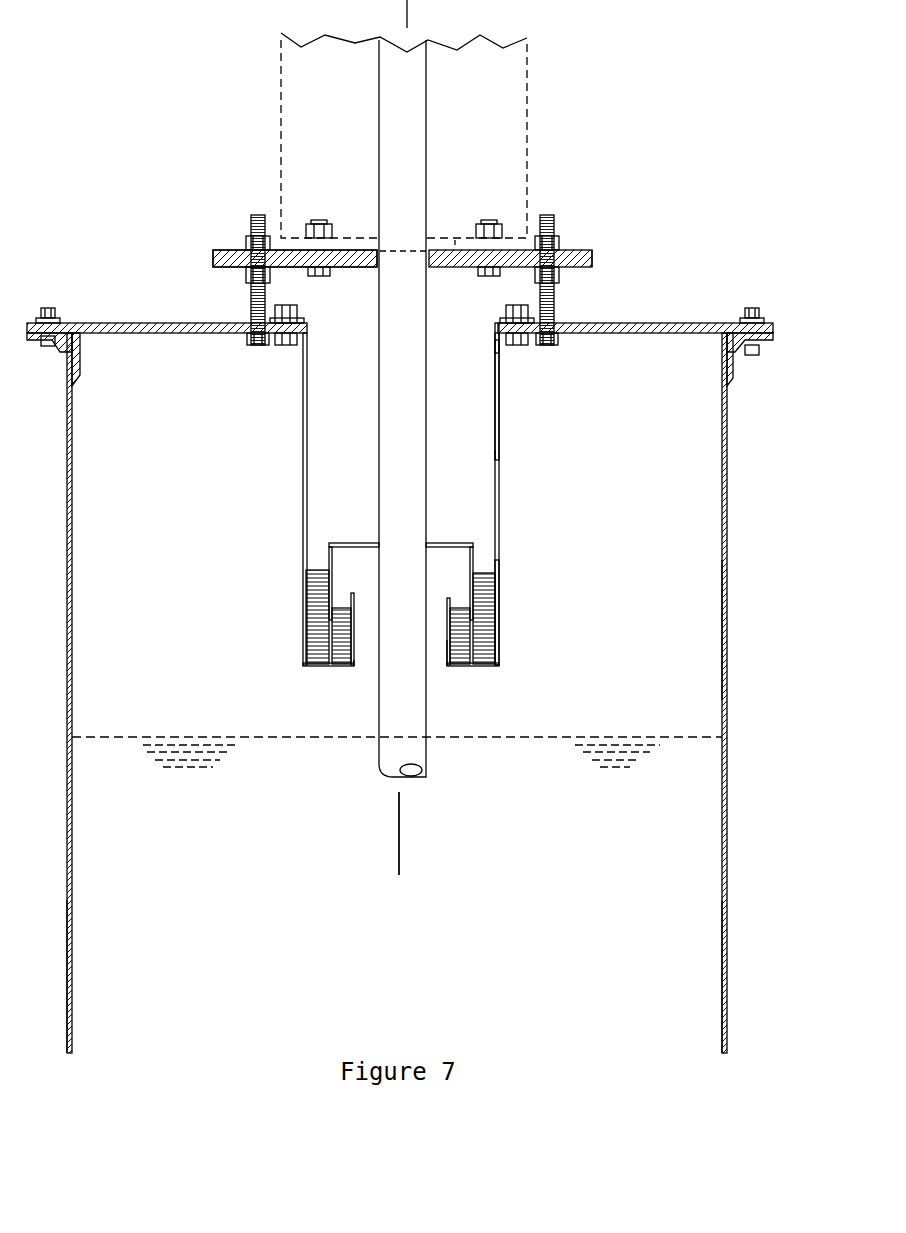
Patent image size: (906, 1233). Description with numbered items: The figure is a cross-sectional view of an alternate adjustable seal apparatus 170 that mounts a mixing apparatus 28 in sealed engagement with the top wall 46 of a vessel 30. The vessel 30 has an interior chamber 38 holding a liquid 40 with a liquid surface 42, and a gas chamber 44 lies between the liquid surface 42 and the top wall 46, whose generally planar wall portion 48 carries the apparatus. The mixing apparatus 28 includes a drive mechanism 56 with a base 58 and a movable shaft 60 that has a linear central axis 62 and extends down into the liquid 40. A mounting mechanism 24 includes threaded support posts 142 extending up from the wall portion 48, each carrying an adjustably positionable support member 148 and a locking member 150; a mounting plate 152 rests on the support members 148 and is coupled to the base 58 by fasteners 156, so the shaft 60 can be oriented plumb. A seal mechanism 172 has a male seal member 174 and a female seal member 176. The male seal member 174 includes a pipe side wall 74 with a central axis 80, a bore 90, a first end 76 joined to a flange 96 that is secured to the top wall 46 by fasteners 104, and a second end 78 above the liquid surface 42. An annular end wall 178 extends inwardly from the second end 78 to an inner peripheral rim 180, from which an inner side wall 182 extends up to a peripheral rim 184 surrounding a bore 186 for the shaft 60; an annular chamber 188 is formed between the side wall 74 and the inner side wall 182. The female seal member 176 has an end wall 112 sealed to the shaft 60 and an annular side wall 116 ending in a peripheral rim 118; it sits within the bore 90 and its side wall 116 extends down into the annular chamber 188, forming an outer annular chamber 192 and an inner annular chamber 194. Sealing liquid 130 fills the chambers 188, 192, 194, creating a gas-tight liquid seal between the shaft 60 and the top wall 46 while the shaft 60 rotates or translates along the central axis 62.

The mounting mechanism 24 is at (651, 261).
The mixing apparatus 28 is at (585, 63).
The vessel 30 is at (739, 530).
The interior chamber 38 is at (711, 676).
The liquid 40 is at (697, 900).
The liquid surface 42 is at (622, 737).
The gas chamber 44 is at (702, 628).
The top wall 46 is at (756, 322).
The wall portion 48 is at (698, 323).
The drive mechanism 56 is at (530, 118).
The base 58 is at (455, 240).
The shaft 60 is at (426, 713).
The central axis 62 is at (399, 856).
The side wall 74 is at (499, 487).
The first end 76 is at (495, 326).
The second end 78 is at (498, 663).
The central axis 80 is at (399, 834).
The bore 90 is at (303, 447).
The flange 96 is at (558, 323).
The fasteners 104 is at (286, 345).
The end wall 112 is at (360, 543).
The side wall 116 is at (328, 558).
The peripheral rim 118 is at (305, 627).
The sealing liquid 130 is at (305, 649).
The threaded support post 142 is at (252, 215).
The support member 148 is at (246, 275).
The locking member 150 is at (246, 243).
The mounting plate 152 is at (213, 258).
The fasteners 156 is at (309, 222).
The adjustable seal apparatus 170 is at (686, 233).
The seal mechanism 172 is at (578, 456).
The male seal member 174 is at (513, 434).
The female seal member 176 is at (510, 550).
The annular end wall 178 is at (477, 666).
The inner peripheral rim 180 is at (352, 662).
The inner side wall 182 is at (365, 640).
The peripheral rim 184 is at (448, 597).
The bore 186 is at (432, 648).
The annular chamber 188 is at (495, 635).
The outer annular chamber 192 is at (497, 592).
The inner annular chamber 194 is at (490, 611).